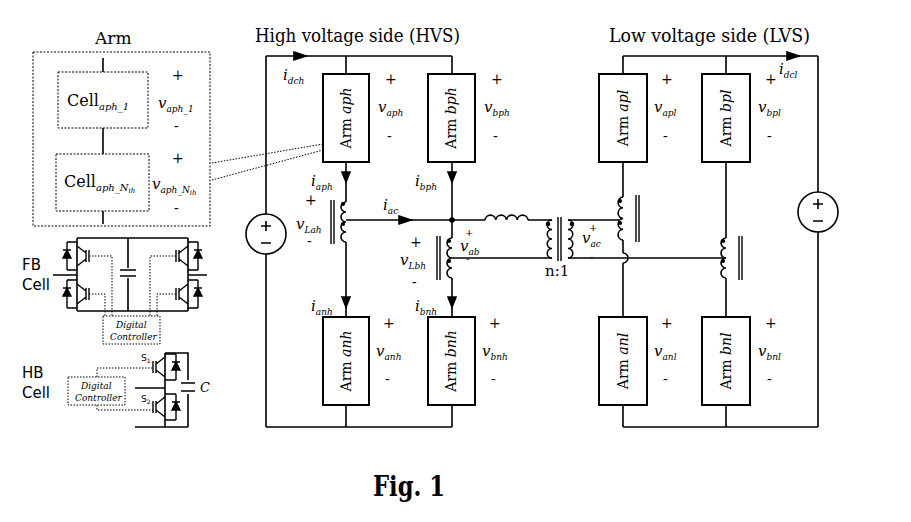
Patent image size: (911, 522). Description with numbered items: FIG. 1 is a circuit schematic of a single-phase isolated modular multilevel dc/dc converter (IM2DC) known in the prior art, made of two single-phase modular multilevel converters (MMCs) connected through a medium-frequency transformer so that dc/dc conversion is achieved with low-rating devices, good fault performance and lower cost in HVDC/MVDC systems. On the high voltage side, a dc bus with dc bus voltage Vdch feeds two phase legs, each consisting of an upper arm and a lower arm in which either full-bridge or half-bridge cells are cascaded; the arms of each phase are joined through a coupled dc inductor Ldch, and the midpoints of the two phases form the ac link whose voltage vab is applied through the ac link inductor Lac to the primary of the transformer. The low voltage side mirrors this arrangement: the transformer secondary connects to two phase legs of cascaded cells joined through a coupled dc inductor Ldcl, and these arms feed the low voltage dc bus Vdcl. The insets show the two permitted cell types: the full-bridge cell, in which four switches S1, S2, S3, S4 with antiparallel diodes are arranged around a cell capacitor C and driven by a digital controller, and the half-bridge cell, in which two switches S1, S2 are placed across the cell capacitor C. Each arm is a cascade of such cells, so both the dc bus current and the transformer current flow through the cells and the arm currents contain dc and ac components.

The cell DC-link capacitor C is at (134, 274).
The full-bridge cell switch S1 is at (87, 277).
The full-bridge cell switch S2 is at (84, 296).
The full-bridge cell switch S3 is at (176, 277).
The full-bridge cell switch S4 is at (179, 296).
The dc bus voltage Vdch is at (251, 234).
The low voltage side DC source Vdcl is at (833, 217).
The high voltage side coupled DC inductor Ldch is at (409, 244).
The AC link inductor Lac is at (506, 205).
The low voltage side coupled DC inductor Ldcl is at (696, 237).